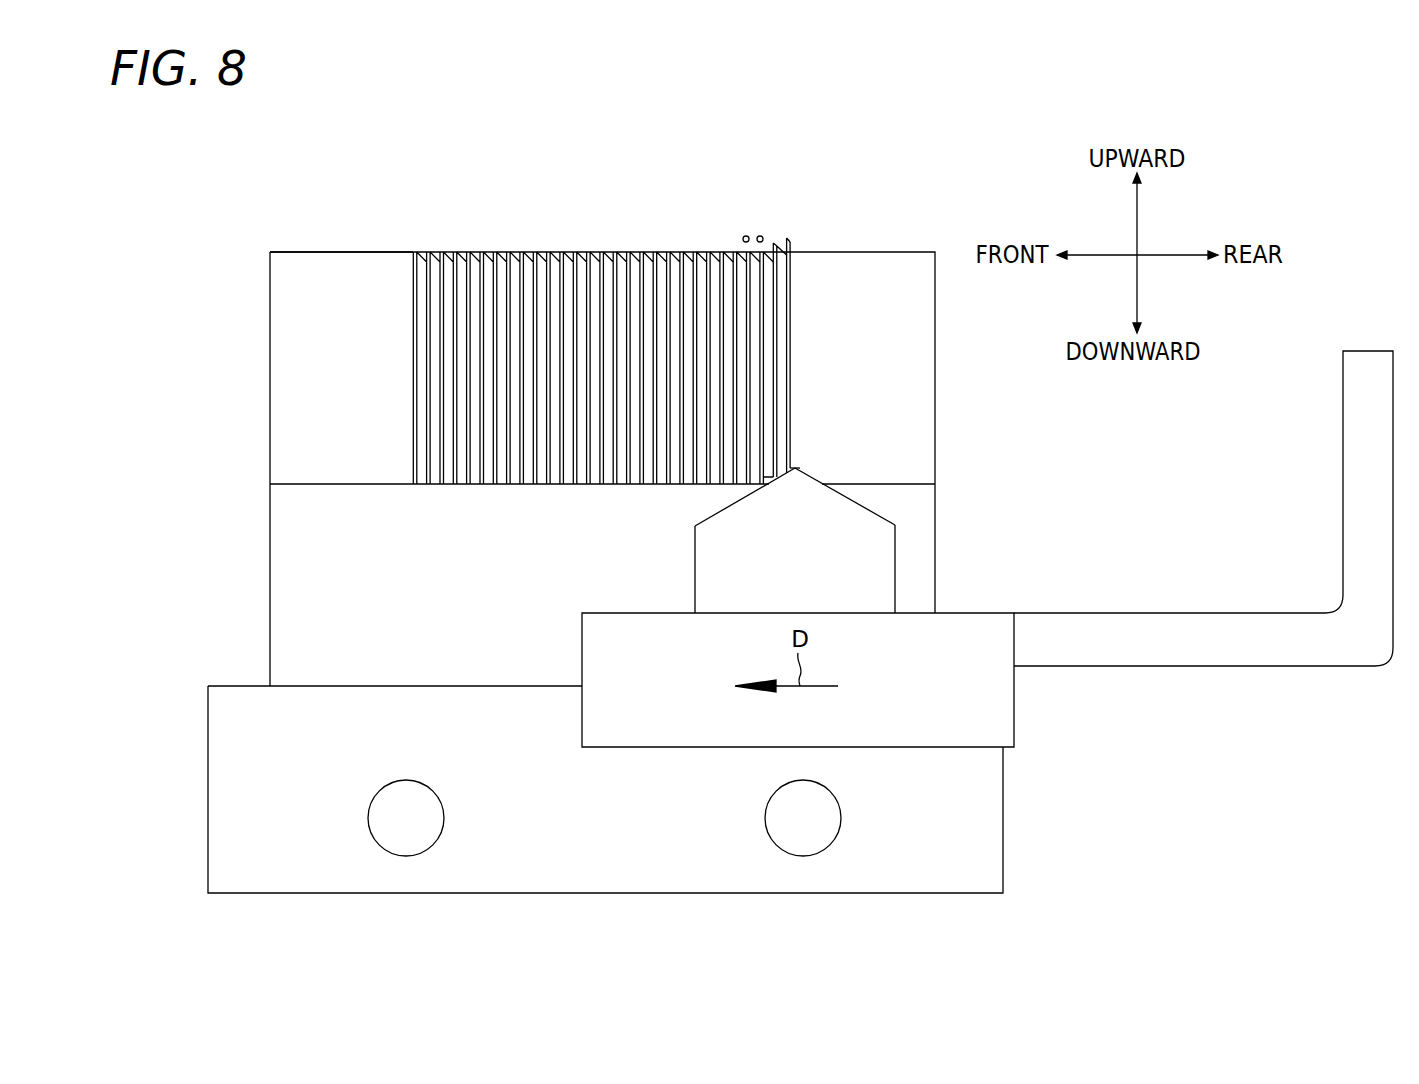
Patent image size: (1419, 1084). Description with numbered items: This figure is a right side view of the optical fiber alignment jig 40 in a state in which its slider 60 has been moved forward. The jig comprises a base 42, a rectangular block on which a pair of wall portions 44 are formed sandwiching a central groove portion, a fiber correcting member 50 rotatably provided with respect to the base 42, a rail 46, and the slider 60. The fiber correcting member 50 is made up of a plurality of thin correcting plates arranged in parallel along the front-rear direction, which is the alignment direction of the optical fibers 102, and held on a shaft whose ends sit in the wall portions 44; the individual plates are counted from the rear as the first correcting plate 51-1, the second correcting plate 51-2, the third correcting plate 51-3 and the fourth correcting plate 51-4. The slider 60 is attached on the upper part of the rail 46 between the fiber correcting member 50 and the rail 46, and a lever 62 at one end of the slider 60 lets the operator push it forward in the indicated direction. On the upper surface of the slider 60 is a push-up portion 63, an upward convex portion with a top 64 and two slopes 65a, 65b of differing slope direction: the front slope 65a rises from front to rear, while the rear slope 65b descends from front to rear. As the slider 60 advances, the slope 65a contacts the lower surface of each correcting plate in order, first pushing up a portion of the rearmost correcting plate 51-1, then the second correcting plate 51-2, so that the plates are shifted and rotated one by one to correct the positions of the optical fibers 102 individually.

The optical fiber alignment jig 40 is at (433, 206).
The base 42 is at (341, 237).
The wall portions 44 is at (323, 365).
The rail 46 is at (590, 893).
The fiber correcting member 50 is at (589, 229).
The first correcting plate 51-1 is at (786, 246).
The second correcting plate 51-2 is at (770, 250).
The third correcting plate 51-3 is at (740, 250).
The fourth correcting plate 51-4 is at (734, 250).
The optical fibers 102 is at (760, 236).
The slider 60 is at (993, 708).
The lever 62 is at (1361, 474).
The push-up portion 63 is at (803, 497).
The top 64 is at (798, 467).
The slope 65a is at (720, 511).
The slope 65b is at (862, 505).